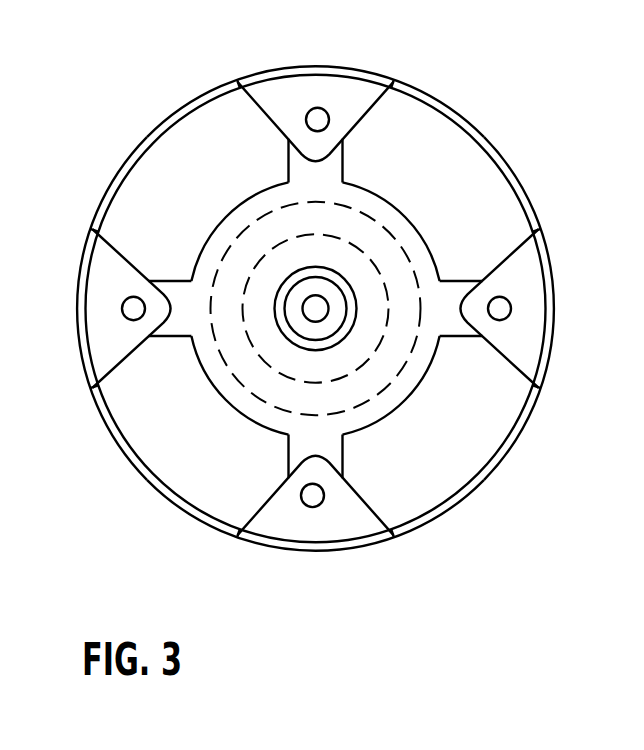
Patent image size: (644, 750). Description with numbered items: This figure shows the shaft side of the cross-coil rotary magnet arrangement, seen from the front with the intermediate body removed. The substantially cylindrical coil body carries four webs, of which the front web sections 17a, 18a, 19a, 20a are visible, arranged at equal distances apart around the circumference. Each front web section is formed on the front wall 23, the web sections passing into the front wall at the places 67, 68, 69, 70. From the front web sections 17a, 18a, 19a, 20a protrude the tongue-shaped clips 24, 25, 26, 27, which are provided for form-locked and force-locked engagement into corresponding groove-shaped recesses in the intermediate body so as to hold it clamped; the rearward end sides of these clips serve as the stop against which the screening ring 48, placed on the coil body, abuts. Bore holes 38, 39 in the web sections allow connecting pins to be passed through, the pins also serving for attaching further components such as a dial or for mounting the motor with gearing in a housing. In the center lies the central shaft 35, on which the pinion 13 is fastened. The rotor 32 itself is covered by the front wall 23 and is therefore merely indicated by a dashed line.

The pinion 13 is at (309, 341).
The front web section 17a is at (107, 270).
The front web section 18a is at (358, 520).
The front web section 19a is at (360, 108).
The front web section 20a is at (513, 273).
The front wall 23 is at (400, 252).
The tongue-shaped clip 24 is at (80, 317).
The tongue-shaped clip 25 is at (337, 70).
The tongue-shaped clip 26 is at (548, 341).
The tongue-shaped clip 27 is at (284, 544).
The rotor 32 is at (281, 351).
The central shaft 35 is at (323, 312).
The bore hole 38 is at (122, 308).
The bore hole 39 is at (312, 497).
The screening ring 48 is at (143, 147).
The place where web section passes into front wall 67 is at (347, 163).
The place where web section passes into front wall 68 is at (505, 392).
The place where web section passes into front wall 69 is at (300, 443).
The place where web section passes into front wall 70 is at (164, 336).